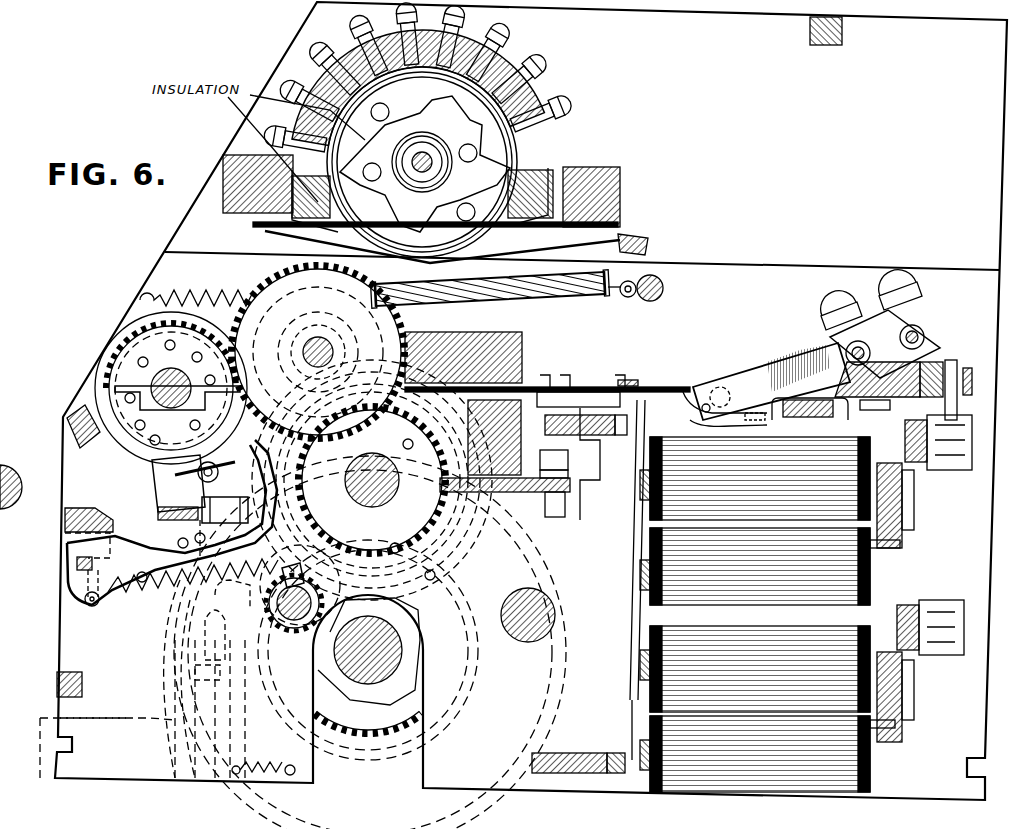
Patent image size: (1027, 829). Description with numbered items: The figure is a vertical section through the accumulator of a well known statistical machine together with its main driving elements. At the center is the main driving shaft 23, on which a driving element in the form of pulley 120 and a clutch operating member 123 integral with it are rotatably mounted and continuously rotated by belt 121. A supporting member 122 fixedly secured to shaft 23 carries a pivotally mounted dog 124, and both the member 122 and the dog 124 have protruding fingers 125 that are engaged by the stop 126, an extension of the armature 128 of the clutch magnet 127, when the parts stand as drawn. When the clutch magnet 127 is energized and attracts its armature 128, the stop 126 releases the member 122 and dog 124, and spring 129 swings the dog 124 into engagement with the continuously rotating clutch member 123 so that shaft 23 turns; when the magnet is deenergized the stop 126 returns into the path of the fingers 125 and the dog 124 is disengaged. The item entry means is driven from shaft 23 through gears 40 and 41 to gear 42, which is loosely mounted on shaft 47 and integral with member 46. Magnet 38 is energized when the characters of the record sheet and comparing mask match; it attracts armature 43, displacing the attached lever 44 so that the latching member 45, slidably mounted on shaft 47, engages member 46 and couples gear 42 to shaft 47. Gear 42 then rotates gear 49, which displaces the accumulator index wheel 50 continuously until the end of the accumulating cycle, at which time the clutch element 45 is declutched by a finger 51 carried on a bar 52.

The main driving shaft 23 is at (348, 657).
The magnet 38 is at (802, 614).
The gear 40 is at (420, 420).
The gear 41 is at (440, 515).
The gear 42 is at (402, 312).
The armature 43 is at (635, 510).
The lever 44 is at (520, 388).
The latching member 45 is at (305, 375).
The member 46 is at (318, 352).
The shaft 47 is at (318, 370).
The gear 49 is at (100, 355).
The accumulator index wheel 50 is at (130, 328).
The finger 51 is at (792, 418).
The bar 52 is at (838, 418).
The pulley 120 is at (553, 576).
The belt 121 is at (580, 665).
The supporting member 122 is at (485, 665).
The clutch operating member 123 is at (440, 665).
The dog 124 is at (318, 567).
The protruding fingers 125 is at (215, 595).
The stop 126 is at (210, 618).
The clutch magnet 127 is at (132, 718).
The armature 128 is at (198, 762).
The spring 129 is at (445, 558).